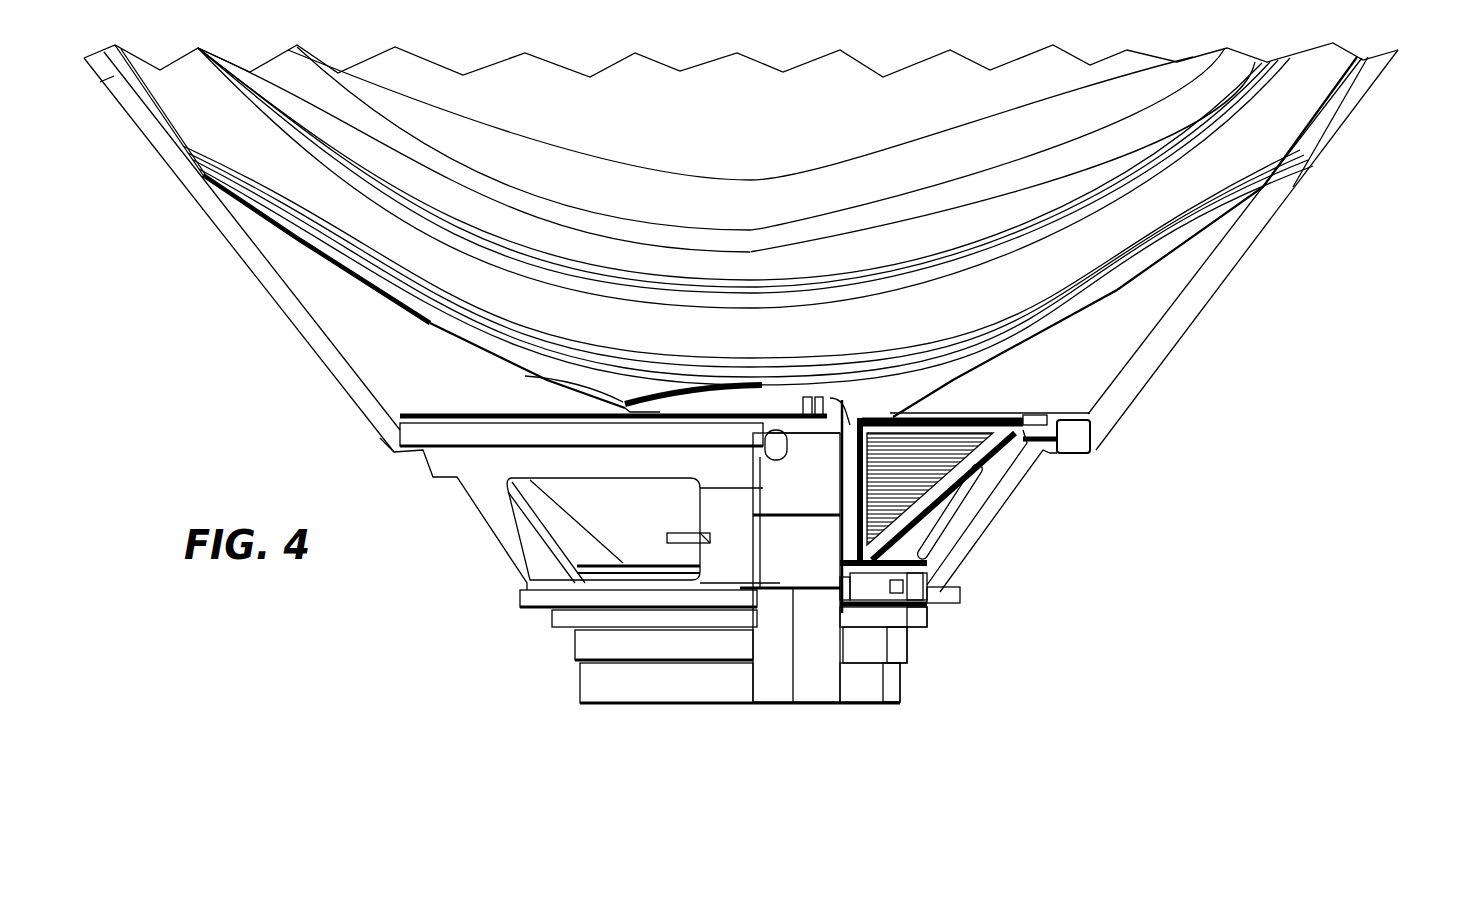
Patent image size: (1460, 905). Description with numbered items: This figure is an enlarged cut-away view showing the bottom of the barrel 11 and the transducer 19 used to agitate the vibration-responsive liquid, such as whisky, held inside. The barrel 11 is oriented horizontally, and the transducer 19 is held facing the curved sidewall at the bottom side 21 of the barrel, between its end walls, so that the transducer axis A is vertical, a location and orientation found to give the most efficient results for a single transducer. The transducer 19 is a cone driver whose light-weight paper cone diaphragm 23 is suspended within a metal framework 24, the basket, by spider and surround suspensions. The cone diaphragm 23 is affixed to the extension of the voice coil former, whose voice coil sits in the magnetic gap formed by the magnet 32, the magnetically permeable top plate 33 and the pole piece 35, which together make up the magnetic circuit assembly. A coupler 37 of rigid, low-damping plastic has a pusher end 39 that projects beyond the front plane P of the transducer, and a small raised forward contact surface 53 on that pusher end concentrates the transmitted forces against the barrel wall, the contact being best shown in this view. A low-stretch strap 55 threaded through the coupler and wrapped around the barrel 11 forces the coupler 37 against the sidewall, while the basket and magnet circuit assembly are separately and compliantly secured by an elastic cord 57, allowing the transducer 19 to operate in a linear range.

The barrel 11 is at (1385, 63).
The transducer 19 is at (1000, 513).
The bottom side 21 is at (905, 373).
The cone diaphragm 23 is at (598, 510).
The metal framework 24 is at (482, 512).
The magnet 32 is at (580, 645).
The top plate 33 is at (556, 611).
The pole piece 35 is at (658, 677).
The coupler 37 is at (940, 520).
The pusher end 39 is at (592, 384).
The forward contact surface 53 is at (720, 380).
The strap 55 is at (1005, 368).
The elastic cord 57 is at (305, 315).
The front plane of the transducer P is at (1090, 413).
The transducer axis A is at (750, 708).